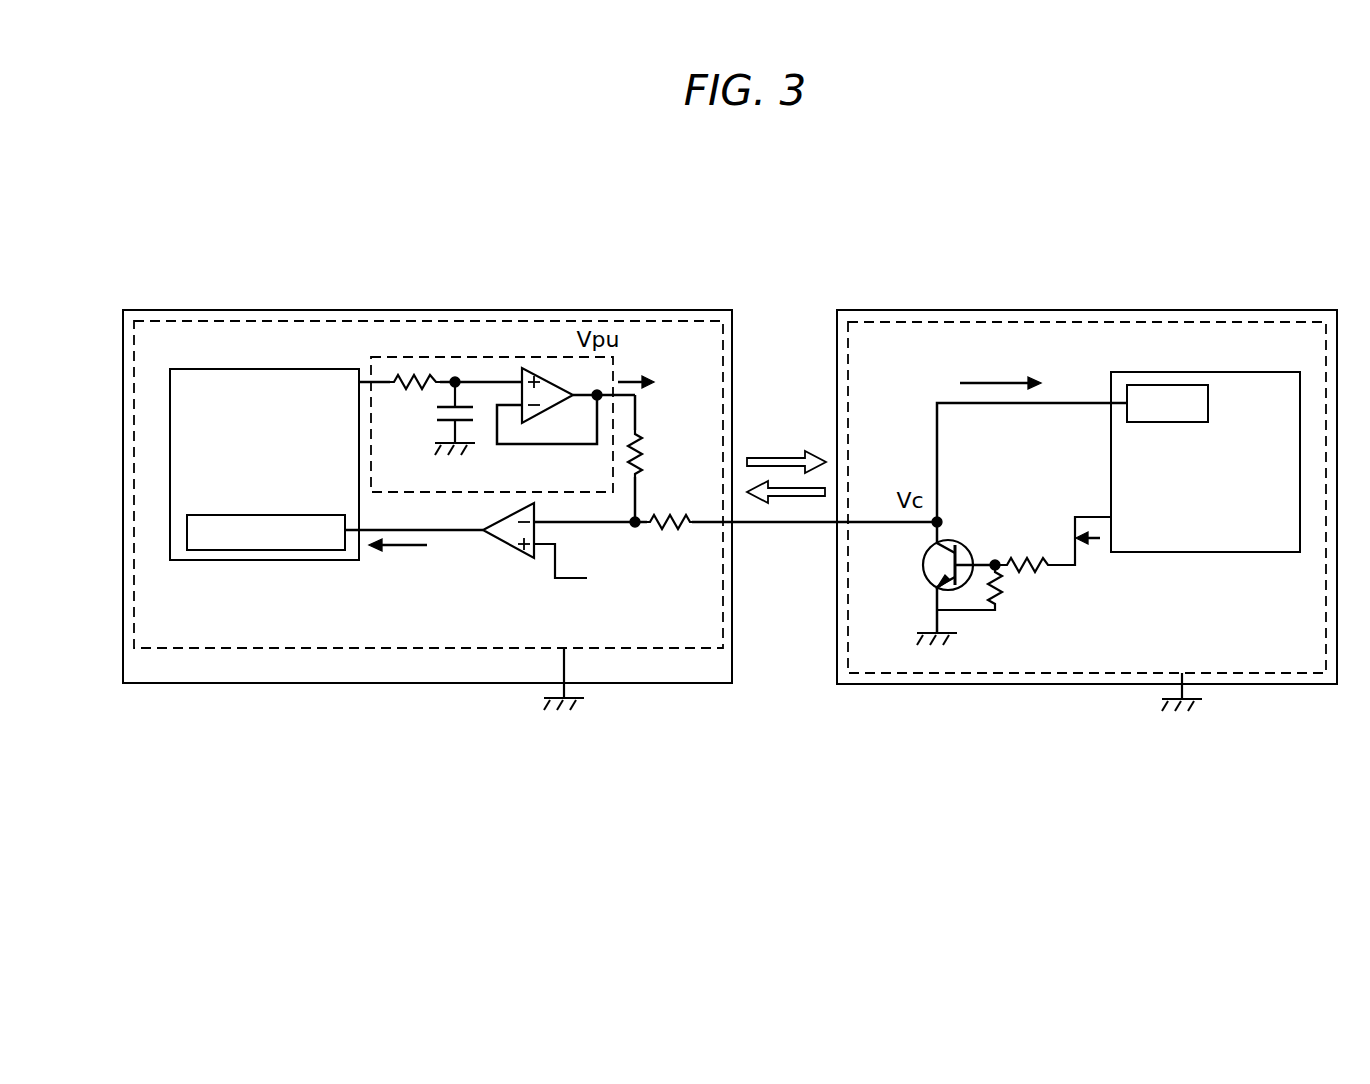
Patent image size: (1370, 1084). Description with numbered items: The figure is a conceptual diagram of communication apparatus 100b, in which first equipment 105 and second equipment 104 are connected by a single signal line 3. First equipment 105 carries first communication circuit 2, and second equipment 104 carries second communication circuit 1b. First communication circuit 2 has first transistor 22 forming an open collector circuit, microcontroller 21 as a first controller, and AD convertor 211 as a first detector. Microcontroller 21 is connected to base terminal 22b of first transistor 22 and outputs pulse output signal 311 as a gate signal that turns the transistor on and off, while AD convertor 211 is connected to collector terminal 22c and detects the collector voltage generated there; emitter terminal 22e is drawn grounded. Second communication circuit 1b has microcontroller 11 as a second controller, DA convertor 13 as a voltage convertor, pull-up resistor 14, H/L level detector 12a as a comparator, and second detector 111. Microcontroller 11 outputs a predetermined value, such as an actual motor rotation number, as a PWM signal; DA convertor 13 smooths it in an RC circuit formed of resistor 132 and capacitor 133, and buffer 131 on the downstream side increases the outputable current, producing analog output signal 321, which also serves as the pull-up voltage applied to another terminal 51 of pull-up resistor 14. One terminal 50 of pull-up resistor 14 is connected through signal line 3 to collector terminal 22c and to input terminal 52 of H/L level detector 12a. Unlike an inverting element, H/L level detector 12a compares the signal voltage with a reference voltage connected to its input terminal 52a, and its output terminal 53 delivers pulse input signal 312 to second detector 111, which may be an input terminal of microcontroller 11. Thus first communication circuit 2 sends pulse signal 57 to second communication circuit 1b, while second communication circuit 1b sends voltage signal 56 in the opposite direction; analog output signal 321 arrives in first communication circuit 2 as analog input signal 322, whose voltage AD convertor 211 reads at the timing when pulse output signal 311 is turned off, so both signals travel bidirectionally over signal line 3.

The second communication circuit 1b is at (228, 648).
The second equipment 104 is at (640, 683).
The microcontroller 11 is at (265, 368).
The second detector 111 is at (223, 550).
The DA convertor 13 is at (458, 357).
The resistor 132 is at (402, 378).
The capacitor 133 is at (450, 403).
The buffer 131 is at (540, 377).
The analog output signal 321 is at (638, 381).
The another terminal 51 is at (637, 410).
The pull-up resistor 14 is at (637, 452).
The one terminal 50 is at (637, 493).
The input terminal 52 is at (610, 524).
The signal line 3 is at (805, 524).
The H/L level detector 12a is at (502, 545).
The input terminal 52a is at (565, 580).
The output terminal 53 is at (445, 533).
The pulse input signal 312 is at (400, 547).
The voltage signal 56 is at (772, 460).
The pulse signal 57 is at (790, 500).
The first communication circuit 2 is at (1253, 673).
The first equipment 105 is at (1297, 684).
The communication apparatus 100b is at (840, 295).
The microcontroller 21 is at (1265, 372).
The AD convertor 211 is at (1178, 385).
The analog input signal 322 is at (998, 383).
The first transistor 22 is at (947, 545).
The collector terminal 22c is at (933, 535).
The emitter terminal 22e is at (933, 602).
The base terminal 22b is at (982, 562).
The pulse output signal 311 is at (1093, 542).